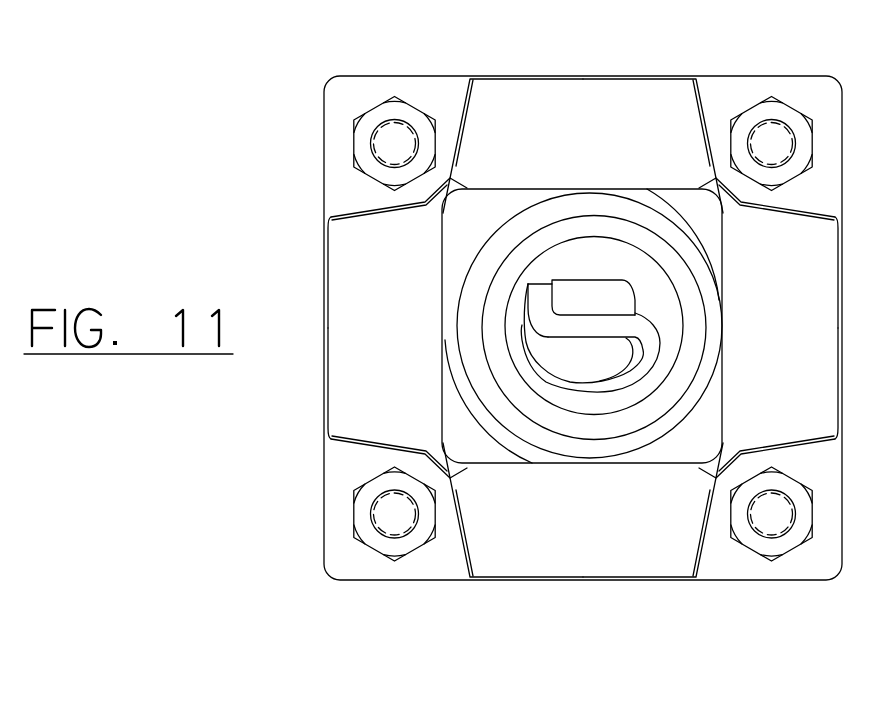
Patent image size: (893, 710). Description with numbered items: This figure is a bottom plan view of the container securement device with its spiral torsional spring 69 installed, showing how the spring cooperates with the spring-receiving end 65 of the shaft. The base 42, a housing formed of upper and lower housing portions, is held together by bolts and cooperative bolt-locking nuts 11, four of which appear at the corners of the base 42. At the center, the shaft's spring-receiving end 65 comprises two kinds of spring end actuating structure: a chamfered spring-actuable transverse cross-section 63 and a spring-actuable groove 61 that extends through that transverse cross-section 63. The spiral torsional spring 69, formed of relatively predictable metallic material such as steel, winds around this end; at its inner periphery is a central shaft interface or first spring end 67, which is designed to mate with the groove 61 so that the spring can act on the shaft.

The bolt-locking nut 11 is at (358, 527).
The base 42 is at (345, 195).
The spring-actuable groove 61 is at (596, 338).
The spring-actuable transverse cross-section 63 is at (572, 282).
The spring-receiving end 65 is at (594, 241).
The first spring end 67 is at (585, 325).
The spiral torsional spring 69 is at (448, 302).